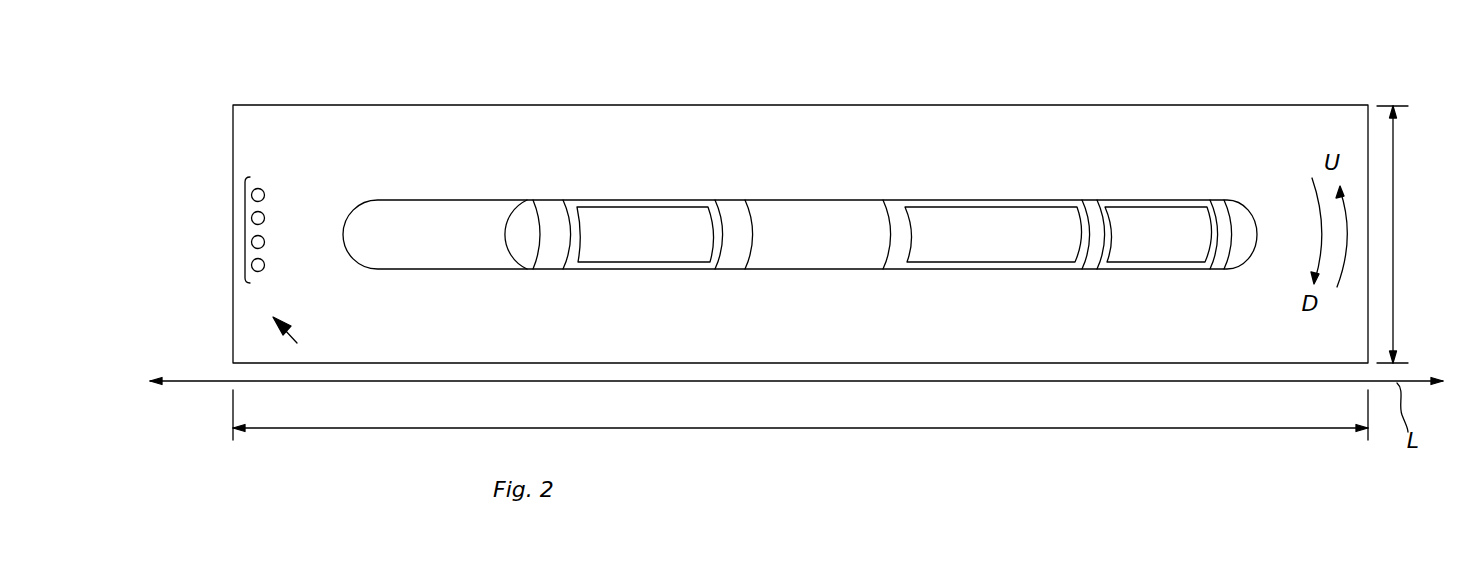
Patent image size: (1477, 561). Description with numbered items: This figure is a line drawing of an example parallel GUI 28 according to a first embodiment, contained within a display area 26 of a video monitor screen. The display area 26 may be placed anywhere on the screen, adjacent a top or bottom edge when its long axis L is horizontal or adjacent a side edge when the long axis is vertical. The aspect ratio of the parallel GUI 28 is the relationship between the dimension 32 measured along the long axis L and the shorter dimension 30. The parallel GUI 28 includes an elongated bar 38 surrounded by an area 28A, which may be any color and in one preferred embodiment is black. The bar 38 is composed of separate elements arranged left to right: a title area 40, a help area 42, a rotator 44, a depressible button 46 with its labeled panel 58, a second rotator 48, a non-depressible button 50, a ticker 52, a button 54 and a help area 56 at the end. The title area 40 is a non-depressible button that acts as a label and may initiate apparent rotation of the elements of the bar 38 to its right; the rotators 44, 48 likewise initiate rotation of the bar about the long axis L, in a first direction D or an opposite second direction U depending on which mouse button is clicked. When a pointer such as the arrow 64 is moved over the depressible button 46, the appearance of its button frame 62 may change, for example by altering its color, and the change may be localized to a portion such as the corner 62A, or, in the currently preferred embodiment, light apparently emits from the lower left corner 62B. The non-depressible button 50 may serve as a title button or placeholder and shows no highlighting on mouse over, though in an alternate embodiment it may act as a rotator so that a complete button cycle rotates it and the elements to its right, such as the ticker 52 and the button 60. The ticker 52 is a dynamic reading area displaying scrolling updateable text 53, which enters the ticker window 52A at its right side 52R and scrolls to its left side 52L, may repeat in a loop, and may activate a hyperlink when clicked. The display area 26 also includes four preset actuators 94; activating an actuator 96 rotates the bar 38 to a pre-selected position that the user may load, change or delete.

The display area 26 is at (398, 105).
The parallel GUI 28 is at (243, 170).
The area 28A is at (865, 139).
The dimension 30 is at (1393, 207).
The dimension 32 is at (1078, 428).
The bar 38 is at (427, 200).
The title area 40 is at (414, 245).
The help area 42 is at (522, 217).
The rotator 44 is at (548, 257).
The button 46 is at (682, 184).
The rotator 48 is at (733, 207).
The button 50 is at (800, 245).
The ticker 52 is at (1022, 245).
The ticker window 52A is at (1053, 207).
The left side 52L is at (913, 247).
The right side 52R is at (1077, 253).
The text 53 is at (980, 210).
The button 54 is at (1185, 186).
The help area 56 is at (1242, 243).
The first panel 58 is at (627, 245).
The button 60 is at (1144, 245).
The button frame 62 is at (597, 200).
The corner 62A is at (720, 263).
The corner 62B is at (566, 273).
The arrow 64 is at (294, 334).
The preset actuators 94 is at (245, 230).
The actuator 96 is at (265, 217).